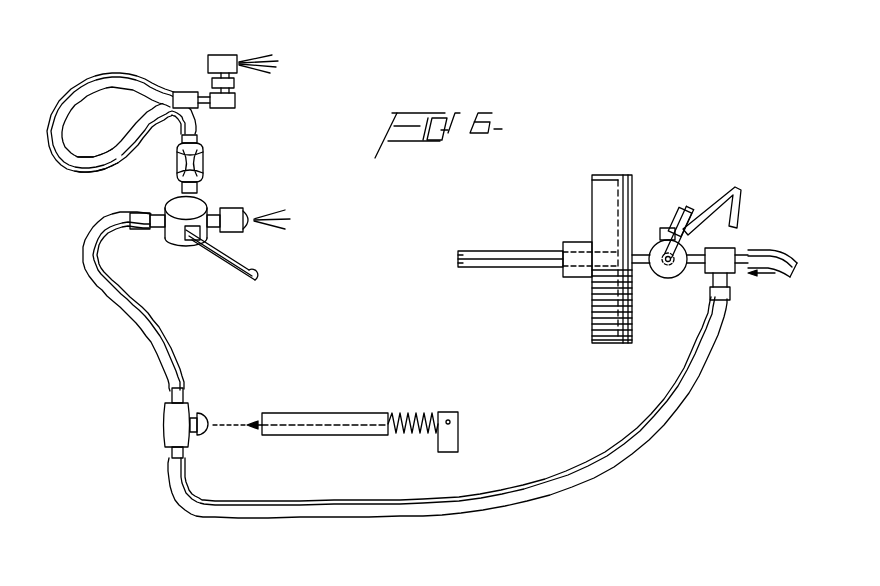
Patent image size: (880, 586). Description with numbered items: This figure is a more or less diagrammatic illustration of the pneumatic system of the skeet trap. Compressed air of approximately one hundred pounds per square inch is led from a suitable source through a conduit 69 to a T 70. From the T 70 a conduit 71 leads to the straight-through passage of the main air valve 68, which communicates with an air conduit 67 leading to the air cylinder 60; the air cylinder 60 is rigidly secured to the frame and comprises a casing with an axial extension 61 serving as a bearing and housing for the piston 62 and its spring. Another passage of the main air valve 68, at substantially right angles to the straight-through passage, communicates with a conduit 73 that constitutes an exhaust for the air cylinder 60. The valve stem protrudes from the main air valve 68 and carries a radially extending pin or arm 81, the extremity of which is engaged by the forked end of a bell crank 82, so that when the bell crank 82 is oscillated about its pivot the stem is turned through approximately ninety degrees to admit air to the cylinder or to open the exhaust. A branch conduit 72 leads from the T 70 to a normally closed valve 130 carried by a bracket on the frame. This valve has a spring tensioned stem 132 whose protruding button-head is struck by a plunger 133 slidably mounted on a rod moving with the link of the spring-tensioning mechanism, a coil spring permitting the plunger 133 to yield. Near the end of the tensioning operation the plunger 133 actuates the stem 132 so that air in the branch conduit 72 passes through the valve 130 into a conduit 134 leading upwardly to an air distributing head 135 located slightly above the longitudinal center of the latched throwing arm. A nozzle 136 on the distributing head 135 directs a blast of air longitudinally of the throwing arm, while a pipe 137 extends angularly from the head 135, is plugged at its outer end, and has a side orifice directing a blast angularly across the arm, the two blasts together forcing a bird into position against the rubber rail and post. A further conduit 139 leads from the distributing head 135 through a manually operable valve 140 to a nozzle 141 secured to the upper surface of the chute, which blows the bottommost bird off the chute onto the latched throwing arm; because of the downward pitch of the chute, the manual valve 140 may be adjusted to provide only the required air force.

The air cylinder 60 is at (599, 176).
The axial extension 61 is at (573, 243).
The piston 62 is at (497, 256).
The air conduit 67 is at (641, 264).
The main air valve 68 is at (673, 278).
The conduit 69 is at (790, 257).
The T 70 is at (728, 249).
The conduit 71 is at (699, 265).
The branch conduit 72 is at (170, 480).
The exhaust conduit 73 is at (660, 233).
The pin or arm 81 is at (686, 208).
The bell crank 82 is at (719, 187).
The normally closed valve 130 is at (163, 418).
The spring tensioned stem 132 is at (205, 413).
The plunger 133 is at (315, 413).
The conduit 134 is at (98, 282).
The air distributing head 135 is at (200, 201).
The nozzle 136 is at (244, 209).
The pipe 137 is at (217, 262).
The conduit 139 is at (92, 65).
The manually operable valve 140 is at (177, 167).
The nozzle 141 is at (229, 55).